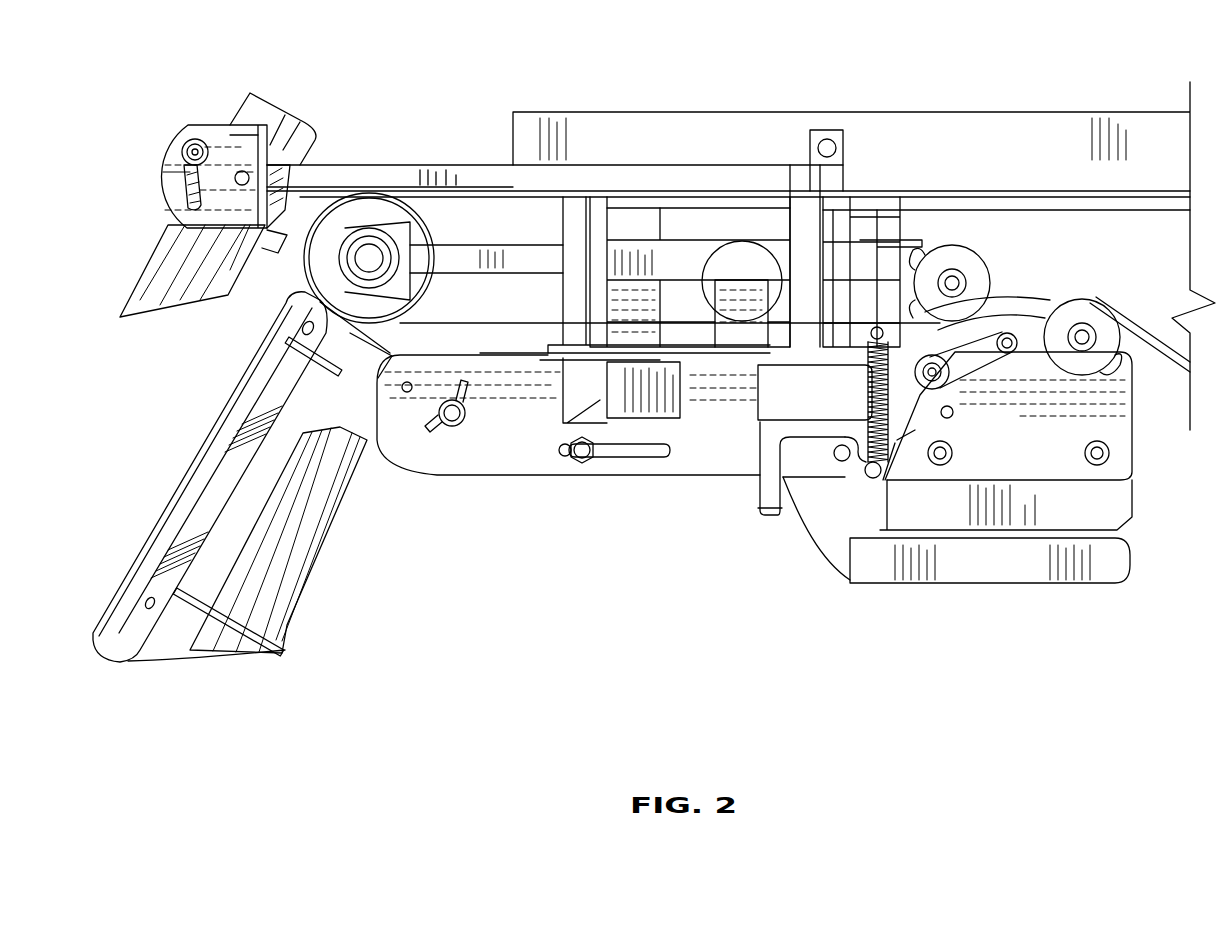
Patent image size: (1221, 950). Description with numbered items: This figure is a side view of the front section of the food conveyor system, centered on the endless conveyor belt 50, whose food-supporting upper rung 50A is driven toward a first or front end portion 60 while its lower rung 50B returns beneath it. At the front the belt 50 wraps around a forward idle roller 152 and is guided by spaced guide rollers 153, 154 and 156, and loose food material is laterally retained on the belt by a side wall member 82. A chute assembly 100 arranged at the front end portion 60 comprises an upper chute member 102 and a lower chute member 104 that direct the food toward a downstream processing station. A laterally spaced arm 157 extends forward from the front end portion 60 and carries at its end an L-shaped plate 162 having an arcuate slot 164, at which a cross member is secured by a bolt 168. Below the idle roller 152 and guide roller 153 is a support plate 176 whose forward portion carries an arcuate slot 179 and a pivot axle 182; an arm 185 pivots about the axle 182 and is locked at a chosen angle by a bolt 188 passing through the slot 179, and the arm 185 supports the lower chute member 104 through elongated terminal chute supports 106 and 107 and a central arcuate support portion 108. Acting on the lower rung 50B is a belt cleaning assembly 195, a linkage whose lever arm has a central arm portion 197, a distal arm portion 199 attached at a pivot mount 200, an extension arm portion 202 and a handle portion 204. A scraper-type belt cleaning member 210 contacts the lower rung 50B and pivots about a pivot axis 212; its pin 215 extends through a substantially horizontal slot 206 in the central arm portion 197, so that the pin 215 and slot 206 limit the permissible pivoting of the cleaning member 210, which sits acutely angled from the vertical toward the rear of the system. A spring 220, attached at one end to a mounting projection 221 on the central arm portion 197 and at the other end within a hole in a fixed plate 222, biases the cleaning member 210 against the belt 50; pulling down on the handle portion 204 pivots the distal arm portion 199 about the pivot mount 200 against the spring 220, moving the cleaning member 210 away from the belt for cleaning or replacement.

The chute assembly 100 is at (167, 132).
The bolt 168 is at (200, 139).
The L-shaped plate 162 is at (243, 135).
The upper chute member 102 is at (298, 104).
The laterally spaced arm 157 is at (315, 178).
The conveyor belt 50 is at (355, 195).
The upper rung 50A is at (460, 193).
The first end portion 60 is at (527, 185).
The guide roller 153 is at (735, 242).
The fixed plate 222 is at (873, 325).
The side wall member 82 is at (970, 135).
The guide roller 154 is at (957, 262).
The belt cleaning member 210 is at (1037, 297).
The pivot axis 212 is at (1087, 327).
The arcuate slot 164 is at (172, 197).
The forward idle roller 152 is at (308, 268).
The elongated terminal chute support 106 is at (200, 496).
The spring 220 is at (866, 392).
The distal arm portion 199 is at (973, 355).
The pivot mount 200 is at (1007, 358).
The guide roller 156 is at (1095, 367).
The lower rung 50B is at (517, 330).
The pivot axle 182 is at (410, 392).
The arcuate slot 179 is at (448, 428).
The bolt 188 is at (462, 428).
The support plate 176 is at (548, 455).
The handle portion 204 is at (760, 512).
The extension arm portion 202 is at (807, 440).
The mounting projection 221 is at (870, 525).
The belt cleaning assembly 195 is at (913, 483).
The central arm portion 197 is at (925, 490).
The pin 215 is at (950, 416).
The slot 206 is at (995, 470).
The arm 185 is at (326, 440).
The elongated terminal chute support 107 is at (287, 587).
The central arcuate support portion 108 is at (277, 605).
The lower chute member 104 is at (193, 657).